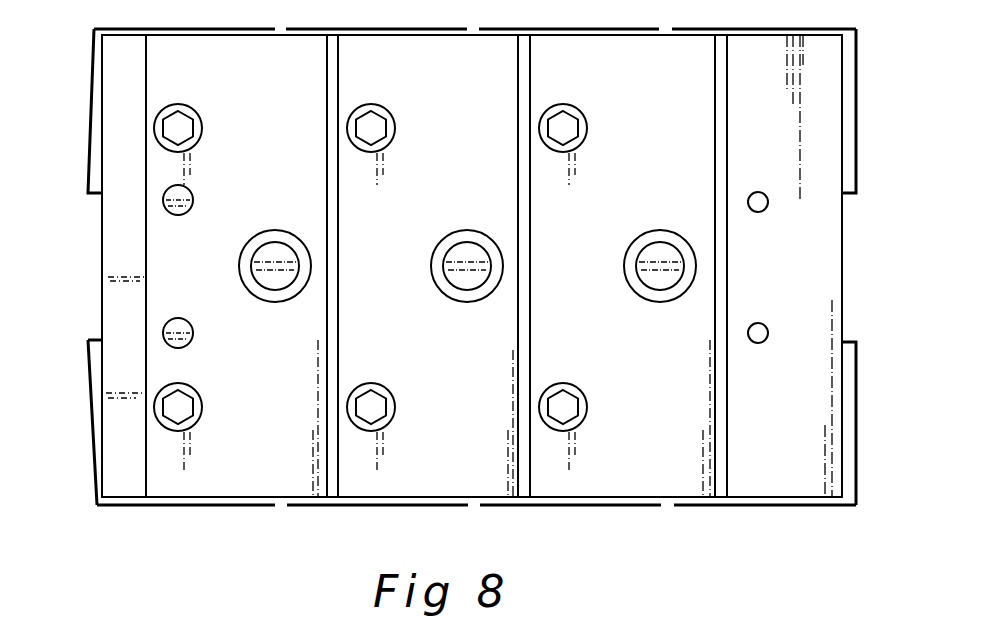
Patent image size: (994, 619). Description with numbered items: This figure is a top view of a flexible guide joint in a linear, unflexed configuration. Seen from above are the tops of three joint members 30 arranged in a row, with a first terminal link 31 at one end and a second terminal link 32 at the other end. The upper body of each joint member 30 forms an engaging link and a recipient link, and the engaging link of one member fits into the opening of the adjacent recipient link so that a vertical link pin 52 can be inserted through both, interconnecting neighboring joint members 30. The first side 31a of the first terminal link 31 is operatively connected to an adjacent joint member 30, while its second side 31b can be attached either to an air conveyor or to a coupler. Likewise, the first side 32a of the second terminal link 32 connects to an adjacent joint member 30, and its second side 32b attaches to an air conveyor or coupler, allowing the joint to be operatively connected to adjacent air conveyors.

The joint member 30 is at (283, 178).
The first terminal link 31 is at (123, 80).
The first side of the first terminal link 31a is at (146, 224).
The second side of the first terminal link 31b is at (102, 258).
The second terminal link 32 is at (795, 283).
The first side of the second terminal link 32a is at (727, 367).
The second side of the second terminal link 32b is at (842, 273).
The vertical link pin 52 is at (276, 283).